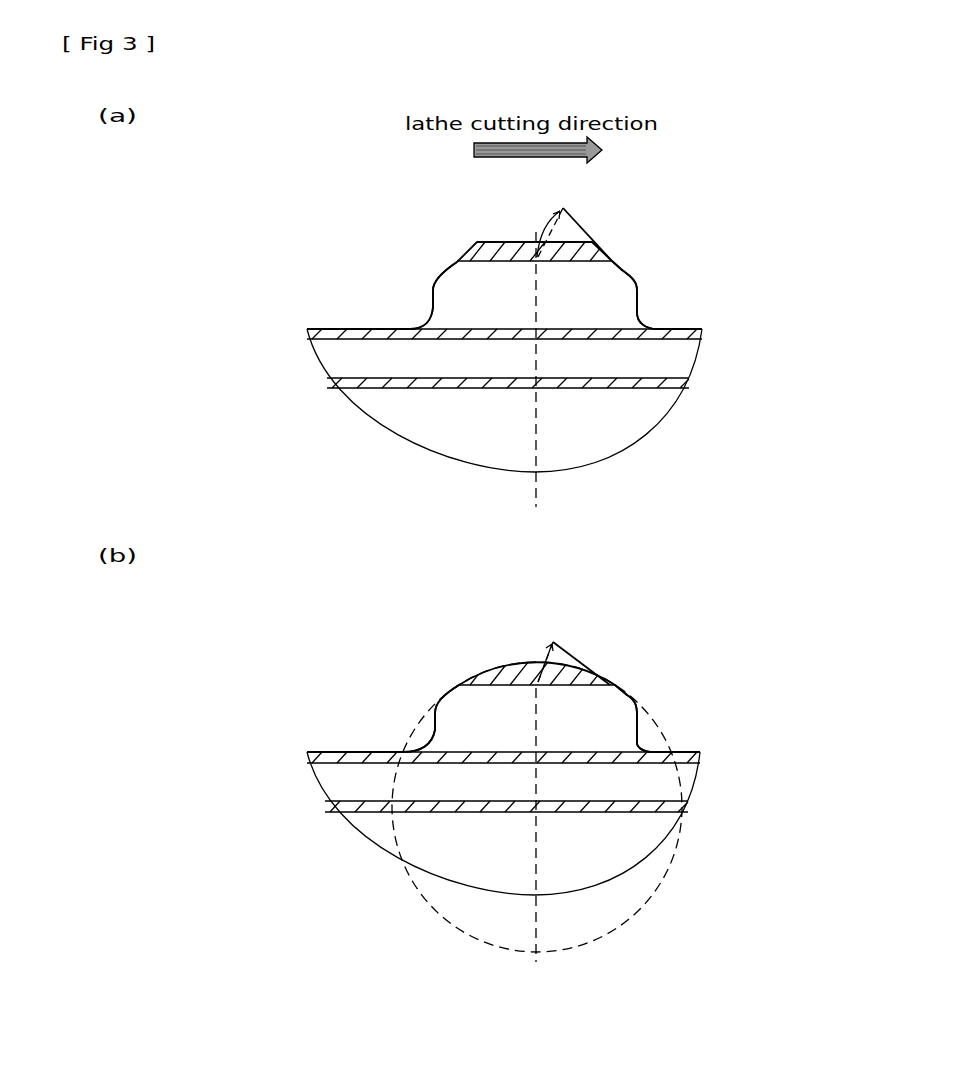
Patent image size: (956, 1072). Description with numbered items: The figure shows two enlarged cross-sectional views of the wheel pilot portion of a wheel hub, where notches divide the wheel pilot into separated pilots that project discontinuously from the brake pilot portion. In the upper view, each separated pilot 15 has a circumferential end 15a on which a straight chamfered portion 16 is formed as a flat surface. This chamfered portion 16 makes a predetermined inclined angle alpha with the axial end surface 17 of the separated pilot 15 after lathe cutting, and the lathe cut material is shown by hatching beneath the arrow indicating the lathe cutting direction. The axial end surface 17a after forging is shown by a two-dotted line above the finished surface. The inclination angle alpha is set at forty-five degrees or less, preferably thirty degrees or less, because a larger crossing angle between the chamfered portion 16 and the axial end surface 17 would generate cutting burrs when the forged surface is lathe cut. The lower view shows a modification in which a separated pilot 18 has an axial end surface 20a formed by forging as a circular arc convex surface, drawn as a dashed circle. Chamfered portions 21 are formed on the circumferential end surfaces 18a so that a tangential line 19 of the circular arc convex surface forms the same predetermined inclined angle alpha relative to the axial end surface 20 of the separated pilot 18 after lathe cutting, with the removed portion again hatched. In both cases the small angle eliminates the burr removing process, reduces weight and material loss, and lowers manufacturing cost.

The separated pilot 15 is at (490, 305).
The circumferential end 15a is at (435, 300).
The chamfered portion 16 is at (447, 270).
The axial end surface 17 is at (507, 260).
The axial end surface after forging 17a is at (580, 223).
The separated pilot 18 is at (473, 713).
The circumferential end surface 18a is at (430, 725).
The tangential line 19 is at (556, 640).
The axial end surface 20 is at (513, 682).
The axial end surface 20a is at (585, 665).
The chamfered portions 21 is at (447, 698).